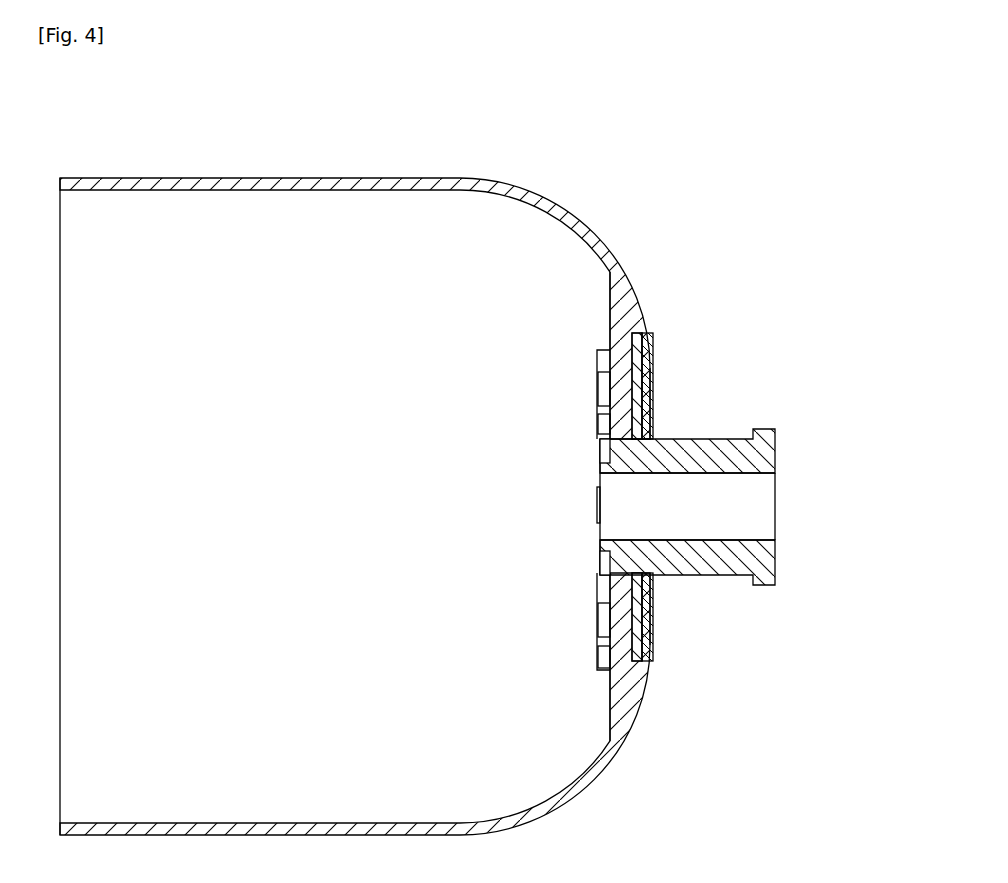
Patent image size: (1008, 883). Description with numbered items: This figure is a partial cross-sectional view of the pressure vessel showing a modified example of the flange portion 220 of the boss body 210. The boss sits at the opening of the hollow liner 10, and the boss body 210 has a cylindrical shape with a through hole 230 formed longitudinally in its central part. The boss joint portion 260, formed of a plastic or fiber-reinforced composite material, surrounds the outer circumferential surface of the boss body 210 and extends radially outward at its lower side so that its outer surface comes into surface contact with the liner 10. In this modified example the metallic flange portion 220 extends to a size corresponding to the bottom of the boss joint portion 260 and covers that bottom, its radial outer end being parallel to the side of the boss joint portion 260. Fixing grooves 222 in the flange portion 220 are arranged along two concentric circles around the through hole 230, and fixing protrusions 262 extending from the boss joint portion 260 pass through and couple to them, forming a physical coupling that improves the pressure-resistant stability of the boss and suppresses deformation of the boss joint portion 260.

The liner 10 is at (407, 180).
The flange portion 220 is at (608, 337).
The fixing groove 222 is at (600, 352).
The boss joint portion 260 is at (632, 332).
The fixing protrusion 262 is at (600, 352).
The boss body 210 is at (776, 449).
The through hole 230 is at (735, 518).